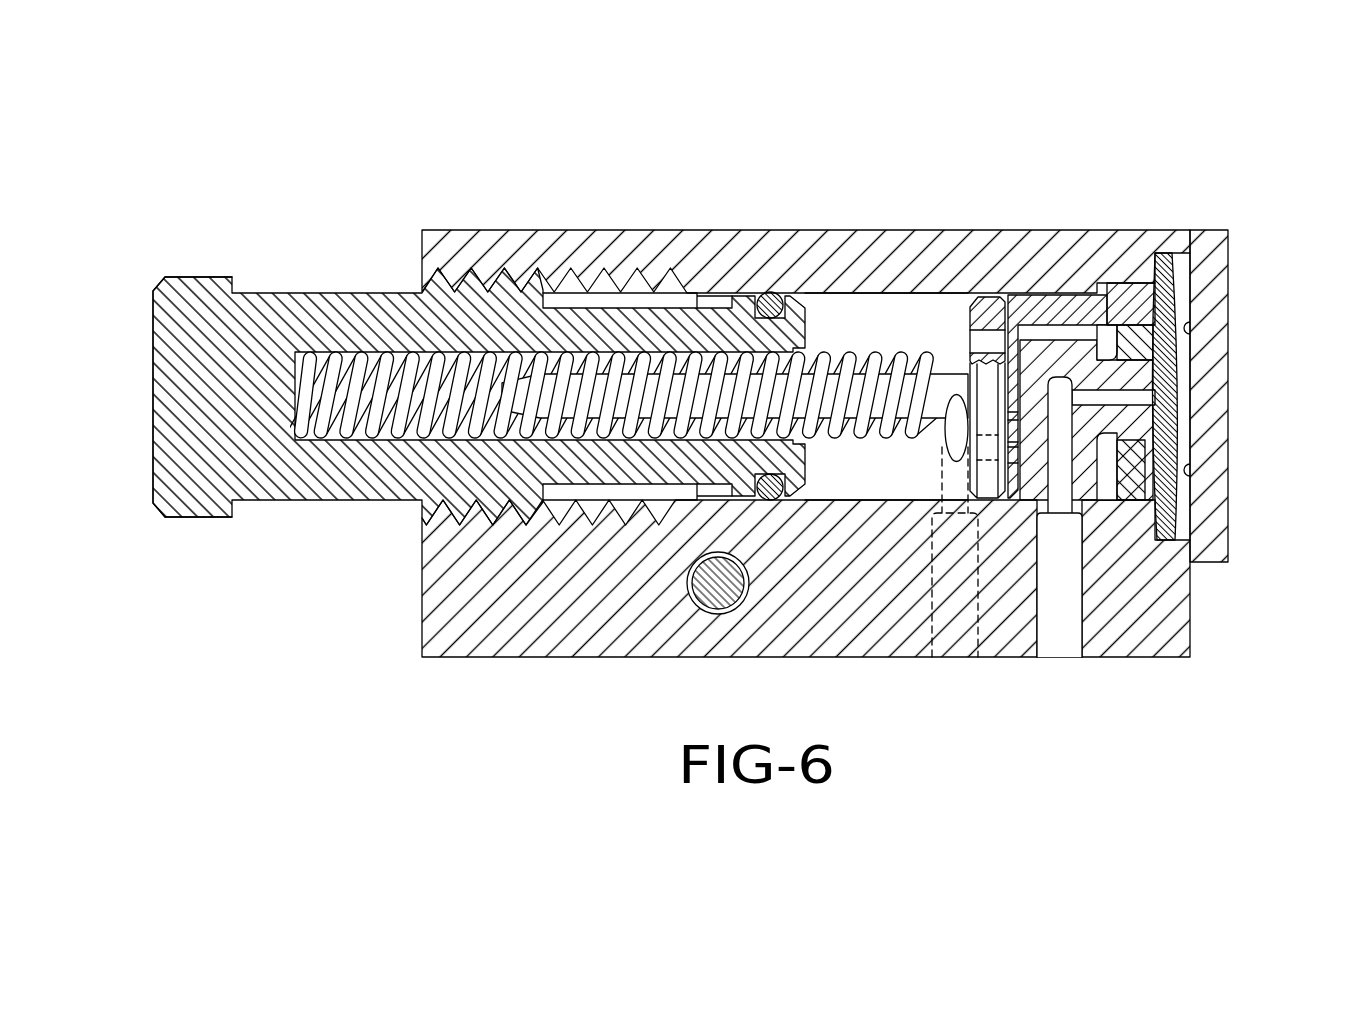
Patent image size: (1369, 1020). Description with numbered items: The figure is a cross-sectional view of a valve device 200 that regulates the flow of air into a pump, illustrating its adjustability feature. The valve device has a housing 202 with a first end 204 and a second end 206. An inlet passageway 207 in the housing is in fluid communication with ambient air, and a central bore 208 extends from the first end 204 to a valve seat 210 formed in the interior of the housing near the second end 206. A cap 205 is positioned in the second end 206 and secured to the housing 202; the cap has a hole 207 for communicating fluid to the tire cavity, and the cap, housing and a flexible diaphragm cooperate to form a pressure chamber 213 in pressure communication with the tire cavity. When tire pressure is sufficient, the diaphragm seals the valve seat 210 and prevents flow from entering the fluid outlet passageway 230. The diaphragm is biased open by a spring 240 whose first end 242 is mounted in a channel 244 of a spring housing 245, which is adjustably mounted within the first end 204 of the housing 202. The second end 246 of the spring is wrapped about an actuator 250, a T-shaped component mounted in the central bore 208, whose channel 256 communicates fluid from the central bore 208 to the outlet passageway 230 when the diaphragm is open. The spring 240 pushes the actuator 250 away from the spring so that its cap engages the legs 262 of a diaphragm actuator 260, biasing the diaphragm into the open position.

The valve device 200 is at (287, 207).
The housing 202 is at (690, 230).
The first end 204 is at (447, 230).
The cap 205 is at (1232, 275).
The second end 206 is at (1190, 605).
The inlet passageway 207 is at (933, 625).
The central bore 208 is at (875, 294).
The valve seat 210 is at (1122, 415).
The pressure chamber 213 is at (1185, 487).
The fluid outlet passageway 230 is at (1080, 580).
The spring 240 is at (395, 440).
The first end 242 is at (296, 428).
The channel 244 is at (358, 440).
The spring housing 245 is at (233, 420).
The second end 246 is at (956, 418).
The actuator 250 is at (962, 300).
The channel 256 is at (1040, 300).
The diaphragm actuator 260 is at (1138, 283).
The legs 262 is at (1078, 298).